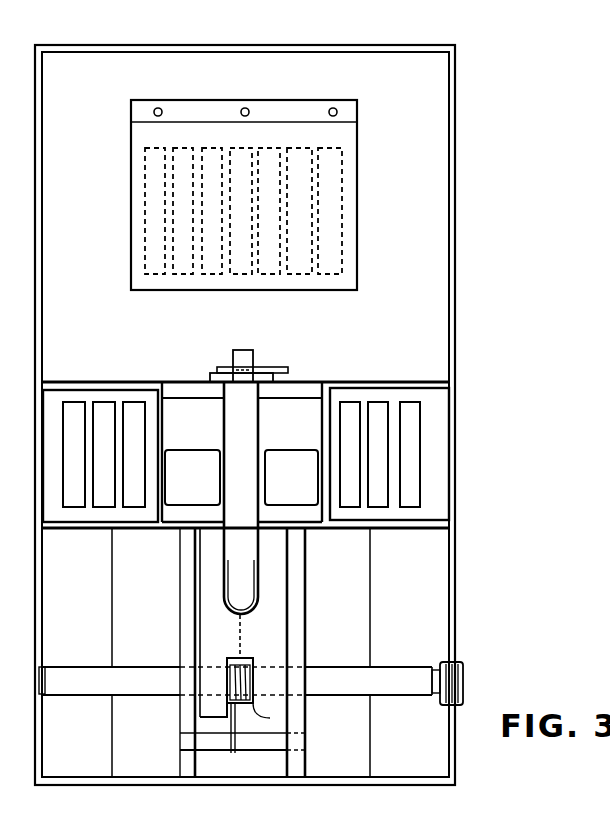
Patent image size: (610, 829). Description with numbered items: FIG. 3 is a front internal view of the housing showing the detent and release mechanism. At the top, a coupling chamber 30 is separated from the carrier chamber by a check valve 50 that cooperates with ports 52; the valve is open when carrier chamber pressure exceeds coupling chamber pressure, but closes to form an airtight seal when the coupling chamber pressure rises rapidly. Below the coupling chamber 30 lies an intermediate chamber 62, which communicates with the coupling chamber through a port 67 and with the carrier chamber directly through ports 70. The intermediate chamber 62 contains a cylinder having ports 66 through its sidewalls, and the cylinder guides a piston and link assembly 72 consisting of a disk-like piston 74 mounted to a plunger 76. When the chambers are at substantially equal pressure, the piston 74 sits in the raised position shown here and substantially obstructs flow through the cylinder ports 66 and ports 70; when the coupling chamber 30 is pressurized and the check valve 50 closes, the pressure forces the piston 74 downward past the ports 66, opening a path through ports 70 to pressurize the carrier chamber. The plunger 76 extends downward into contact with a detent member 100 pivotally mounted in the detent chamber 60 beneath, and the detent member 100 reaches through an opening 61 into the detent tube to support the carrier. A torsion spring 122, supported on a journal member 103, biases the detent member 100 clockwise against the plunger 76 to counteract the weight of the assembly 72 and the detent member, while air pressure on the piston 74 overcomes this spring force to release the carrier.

The coupling chamber 30 is at (90, 148).
The check valve 50 is at (348, 142).
The ports 52 is at (326, 276).
The detent chamber 60 is at (420, 578).
The opening 61 is at (364, 605).
The intermediate chamber 62 is at (440, 420).
The ports 66 is at (188, 450).
The port 67 is at (318, 382).
The ports 70 is at (380, 487).
The piston and link assembly 72 is at (232, 358).
The piston 74 is at (297, 382).
The plunger 76 is at (254, 493).
The detent member 100 is at (270, 652).
The journal member 103 is at (397, 690).
The torsion spring 122 is at (243, 722).